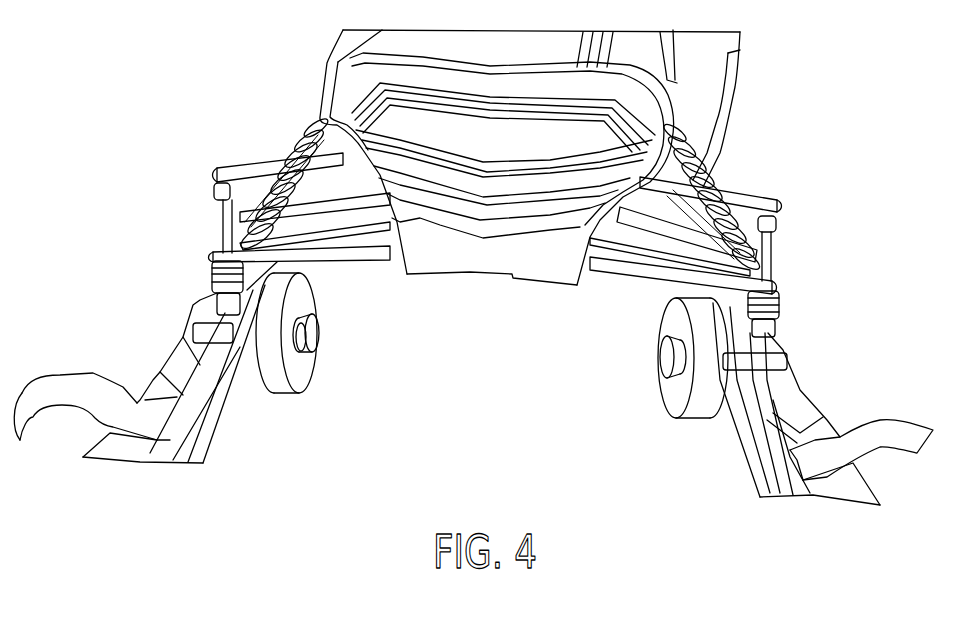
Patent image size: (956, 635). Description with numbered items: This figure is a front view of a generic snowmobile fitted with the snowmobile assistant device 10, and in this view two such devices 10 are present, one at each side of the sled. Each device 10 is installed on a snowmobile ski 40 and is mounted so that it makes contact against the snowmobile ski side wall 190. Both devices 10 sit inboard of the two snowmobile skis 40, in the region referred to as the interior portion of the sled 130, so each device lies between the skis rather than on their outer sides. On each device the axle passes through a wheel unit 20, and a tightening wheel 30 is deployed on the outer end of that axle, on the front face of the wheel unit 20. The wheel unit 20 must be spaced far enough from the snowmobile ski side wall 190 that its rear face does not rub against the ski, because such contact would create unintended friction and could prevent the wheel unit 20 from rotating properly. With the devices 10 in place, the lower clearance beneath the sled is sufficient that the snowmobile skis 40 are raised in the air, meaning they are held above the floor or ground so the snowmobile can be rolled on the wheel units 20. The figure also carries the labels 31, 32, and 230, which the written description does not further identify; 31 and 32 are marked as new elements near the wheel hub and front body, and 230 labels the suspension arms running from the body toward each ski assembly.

The snowmobile assistant device 10 is at (473, 267).
The wheel unit 20 is at (273, 384).
The tightening wheel 30 is at (314, 341).
The spacer 31 is at (299, 353).
The front body panel 32 is at (337, 73).
The snowmobile ski 40 is at (136, 362).
The interior portion of the sled 130 is at (490, 392).
The snowmobile ski side wall 190 is at (775, 397).
The lower control arm 230 is at (368, 252).